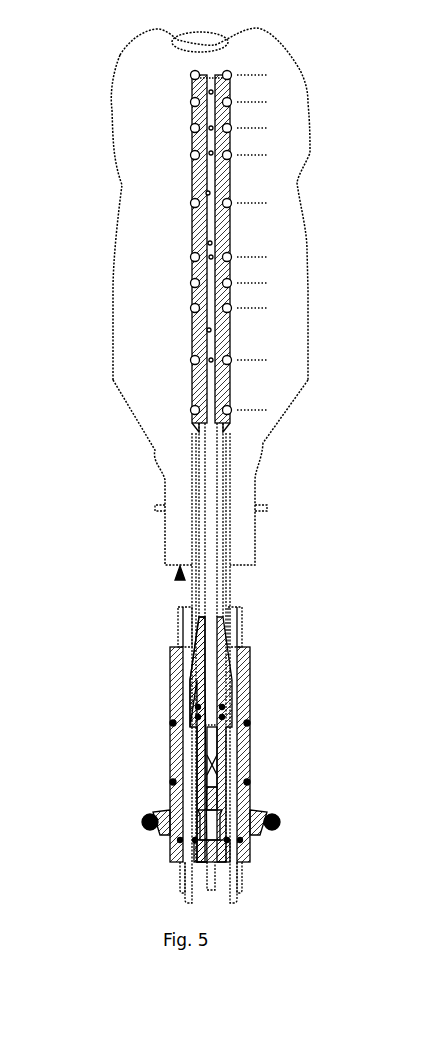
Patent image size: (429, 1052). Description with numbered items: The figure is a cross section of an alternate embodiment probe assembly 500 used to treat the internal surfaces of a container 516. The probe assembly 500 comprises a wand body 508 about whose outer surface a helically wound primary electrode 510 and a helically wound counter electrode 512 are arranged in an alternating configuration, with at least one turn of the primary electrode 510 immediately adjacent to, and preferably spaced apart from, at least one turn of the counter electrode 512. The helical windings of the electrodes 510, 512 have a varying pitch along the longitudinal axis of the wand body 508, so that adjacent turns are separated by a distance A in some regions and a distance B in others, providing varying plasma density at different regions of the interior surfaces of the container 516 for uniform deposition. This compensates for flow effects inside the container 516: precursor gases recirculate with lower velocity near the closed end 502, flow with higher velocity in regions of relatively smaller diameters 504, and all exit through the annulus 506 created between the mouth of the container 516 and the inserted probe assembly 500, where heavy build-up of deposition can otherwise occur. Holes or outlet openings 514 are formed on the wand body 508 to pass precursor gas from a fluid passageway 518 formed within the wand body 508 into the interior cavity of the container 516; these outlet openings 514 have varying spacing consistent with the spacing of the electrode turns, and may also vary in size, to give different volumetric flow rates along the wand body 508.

The probe assembly 500 is at (160, 687).
The closed end 502 is at (120, 55).
The smaller diameters 504 is at (120, 185).
The annulus 506 is at (180, 580).
The wand body 508 is at (200, 322).
The primary electrode 510 is at (195, 412).
The counter electrode 512 is at (232, 412).
The holes or outlet openings 514 is at (197, 267).
The container 516 is at (312, 122).
The fluid passageway 518 is at (213, 190).